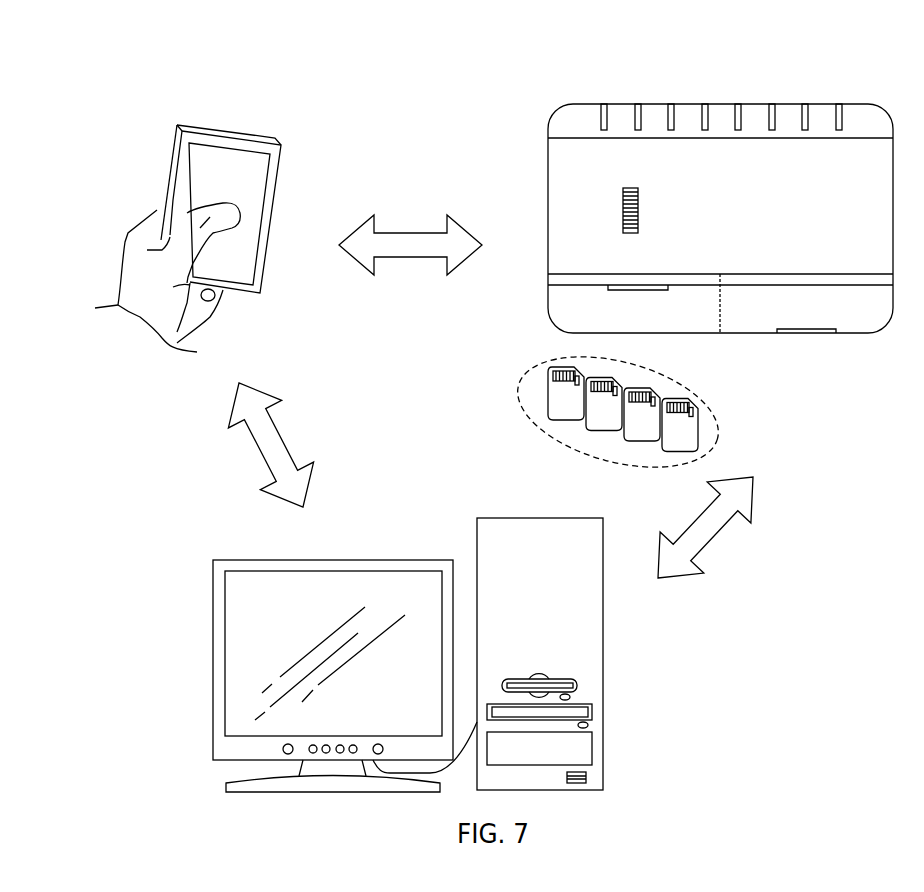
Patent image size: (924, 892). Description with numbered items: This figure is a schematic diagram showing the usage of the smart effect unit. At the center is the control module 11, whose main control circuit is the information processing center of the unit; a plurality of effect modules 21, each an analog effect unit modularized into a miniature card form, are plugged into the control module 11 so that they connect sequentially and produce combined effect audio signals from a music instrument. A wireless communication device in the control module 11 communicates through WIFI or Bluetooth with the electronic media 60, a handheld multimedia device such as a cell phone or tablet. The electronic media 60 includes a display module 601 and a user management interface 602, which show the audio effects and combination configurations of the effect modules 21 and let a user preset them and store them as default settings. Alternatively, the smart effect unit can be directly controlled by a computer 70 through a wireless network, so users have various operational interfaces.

The control module 11 is at (747, 103).
The effect module 21 is at (707, 407).
The electronic media 60 is at (208, 127).
The display module 601 is at (253, 175).
The user management interface 602 is at (247, 228).
The computer 70 is at (402, 560).